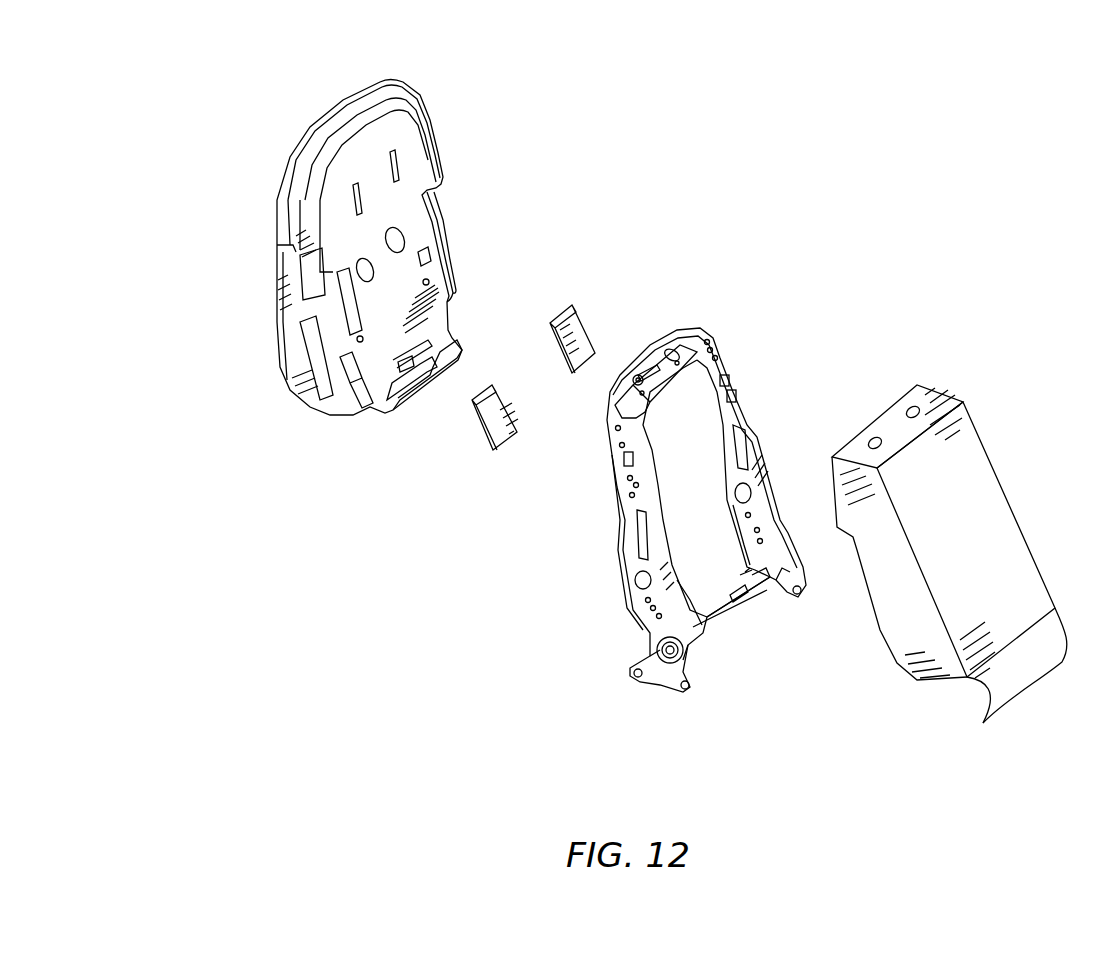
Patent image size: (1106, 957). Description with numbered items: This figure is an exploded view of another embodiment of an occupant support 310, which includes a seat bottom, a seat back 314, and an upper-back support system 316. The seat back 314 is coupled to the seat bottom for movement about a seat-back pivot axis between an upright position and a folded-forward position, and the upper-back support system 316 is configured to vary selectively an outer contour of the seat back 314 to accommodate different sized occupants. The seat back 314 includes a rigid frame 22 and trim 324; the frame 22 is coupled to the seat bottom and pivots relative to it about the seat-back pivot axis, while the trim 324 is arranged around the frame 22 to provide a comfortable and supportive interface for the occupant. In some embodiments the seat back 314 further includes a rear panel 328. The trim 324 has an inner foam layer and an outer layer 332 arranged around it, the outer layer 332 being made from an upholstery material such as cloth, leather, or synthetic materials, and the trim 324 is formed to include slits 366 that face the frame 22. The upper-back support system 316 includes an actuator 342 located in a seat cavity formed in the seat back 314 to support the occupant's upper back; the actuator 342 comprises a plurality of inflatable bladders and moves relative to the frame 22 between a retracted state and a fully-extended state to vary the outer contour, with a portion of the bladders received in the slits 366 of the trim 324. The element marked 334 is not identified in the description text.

The occupant support 310 is at (862, 165).
The seat back 314 is at (928, 343).
The upper-back support system 316 is at (592, 237).
The frame 22 is at (743, 397).
The trim 324 is at (275, 318).
The rear panel 328 is at (1000, 457).
The outer layer 332 is at (275, 347).
The tab 334 is at (298, 367).
The actuator 342 is at (593, 307).
The slits 366 is at (397, 163).